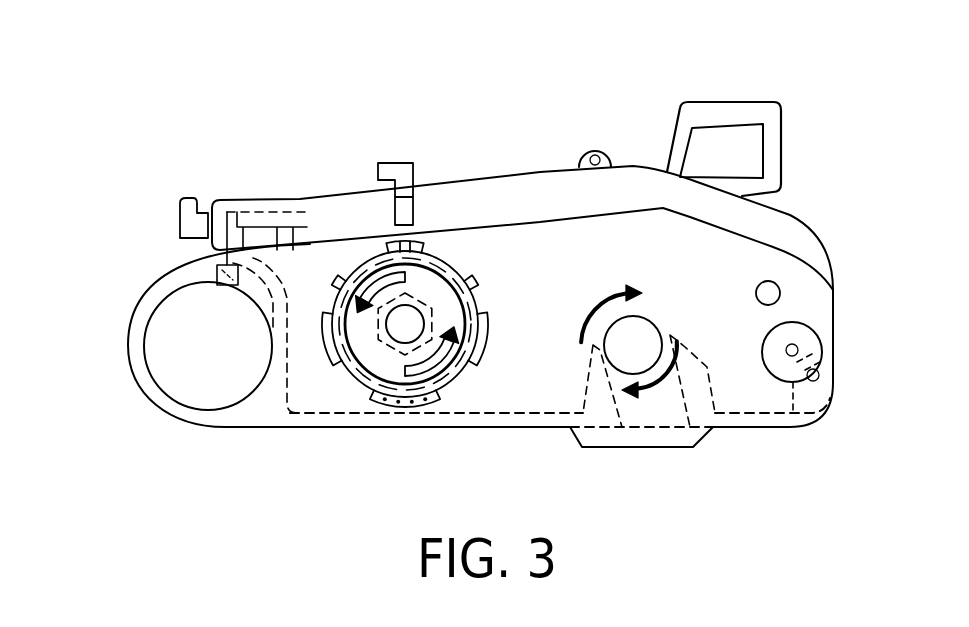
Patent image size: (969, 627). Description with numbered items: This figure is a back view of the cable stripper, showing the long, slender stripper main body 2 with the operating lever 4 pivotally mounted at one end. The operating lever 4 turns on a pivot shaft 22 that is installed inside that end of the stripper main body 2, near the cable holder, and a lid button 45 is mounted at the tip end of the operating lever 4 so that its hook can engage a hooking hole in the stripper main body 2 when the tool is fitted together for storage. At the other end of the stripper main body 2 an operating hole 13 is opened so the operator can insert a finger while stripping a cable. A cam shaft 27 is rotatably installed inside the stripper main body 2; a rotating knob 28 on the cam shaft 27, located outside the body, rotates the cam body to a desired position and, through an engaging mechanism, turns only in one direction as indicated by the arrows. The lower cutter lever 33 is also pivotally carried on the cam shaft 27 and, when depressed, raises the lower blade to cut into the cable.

The stripper main body 2 is at (272, 405).
The operating lever 4 is at (465, 180).
The operating hole 13 is at (188, 392).
The pivot shaft 22 is at (772, 292).
The cam shaft 27 is at (404, 326).
The rotating knob 28 is at (408, 397).
The lower cutter lever 33 is at (725, 108).
The lid button 45 is at (188, 220).